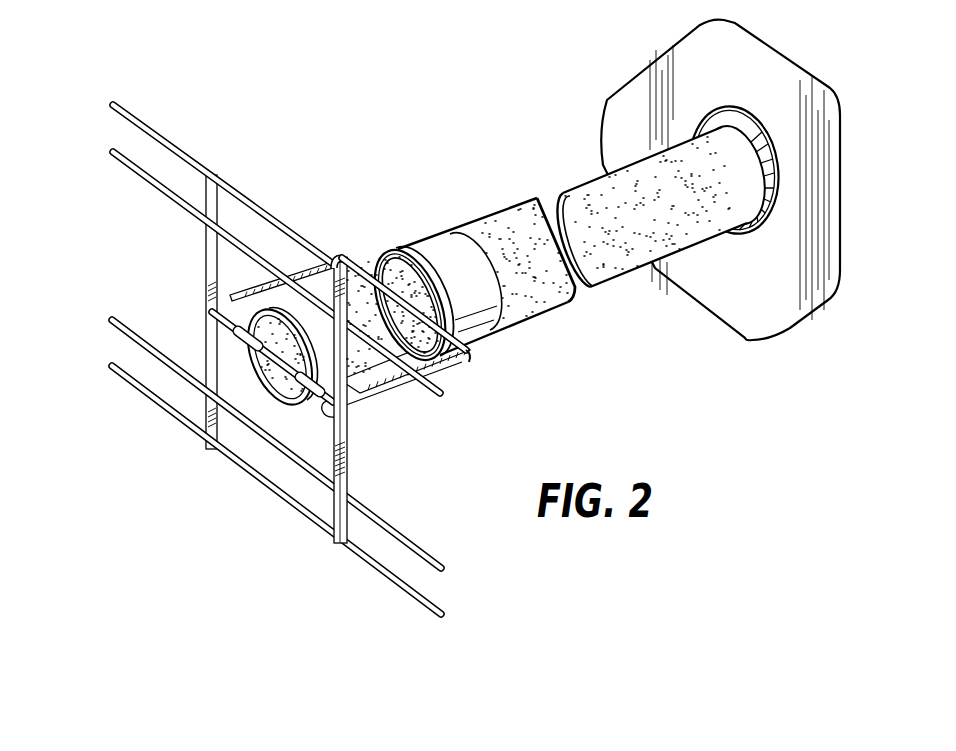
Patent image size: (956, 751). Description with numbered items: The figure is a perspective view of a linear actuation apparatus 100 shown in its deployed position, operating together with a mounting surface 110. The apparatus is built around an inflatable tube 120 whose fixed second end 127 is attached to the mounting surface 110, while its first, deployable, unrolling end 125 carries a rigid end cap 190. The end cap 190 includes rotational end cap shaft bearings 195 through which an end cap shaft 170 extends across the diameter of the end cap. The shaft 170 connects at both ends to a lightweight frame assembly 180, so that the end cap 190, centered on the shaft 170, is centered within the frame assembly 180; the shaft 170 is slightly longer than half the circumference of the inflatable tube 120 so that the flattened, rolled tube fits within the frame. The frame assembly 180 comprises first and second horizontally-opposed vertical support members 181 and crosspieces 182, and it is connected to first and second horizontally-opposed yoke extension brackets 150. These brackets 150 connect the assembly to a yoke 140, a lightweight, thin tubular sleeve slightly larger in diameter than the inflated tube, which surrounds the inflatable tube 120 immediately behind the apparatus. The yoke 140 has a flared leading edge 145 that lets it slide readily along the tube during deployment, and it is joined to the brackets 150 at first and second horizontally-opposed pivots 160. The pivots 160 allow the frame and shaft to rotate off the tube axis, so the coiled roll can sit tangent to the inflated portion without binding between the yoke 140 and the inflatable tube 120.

The linear actuation apparatus 100 is at (291, 304).
The mounting surface 110 is at (770, 75).
The inflatable tube 120 is at (560, 298).
The first, deployable, unrolling end 125 is at (232, 343).
The fixed second end 127 is at (728, 250).
The yoke 140 is at (453, 247).
The flared leading edge 145 is at (395, 250).
The yoke extension brackets 150 is at (412, 388).
The pivots 160 is at (463, 357).
The end cap shaft 170 is at (340, 414).
The frame assembly 180 is at (325, 545).
The vertical support members 181 is at (330, 500).
The crosspieces 182 is at (350, 552).
The rigid end cap 190 is at (248, 365).
The end cap shaft bearings 195 is at (280, 392).